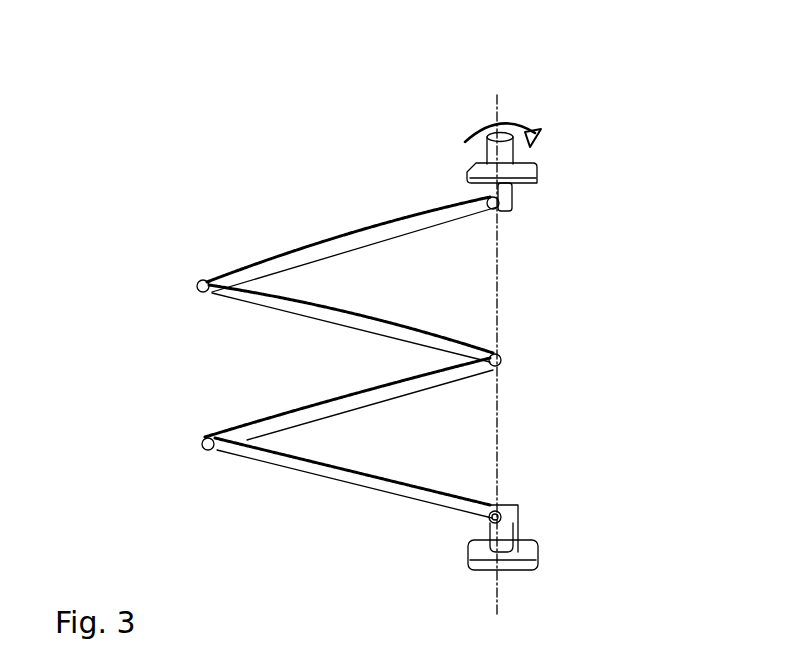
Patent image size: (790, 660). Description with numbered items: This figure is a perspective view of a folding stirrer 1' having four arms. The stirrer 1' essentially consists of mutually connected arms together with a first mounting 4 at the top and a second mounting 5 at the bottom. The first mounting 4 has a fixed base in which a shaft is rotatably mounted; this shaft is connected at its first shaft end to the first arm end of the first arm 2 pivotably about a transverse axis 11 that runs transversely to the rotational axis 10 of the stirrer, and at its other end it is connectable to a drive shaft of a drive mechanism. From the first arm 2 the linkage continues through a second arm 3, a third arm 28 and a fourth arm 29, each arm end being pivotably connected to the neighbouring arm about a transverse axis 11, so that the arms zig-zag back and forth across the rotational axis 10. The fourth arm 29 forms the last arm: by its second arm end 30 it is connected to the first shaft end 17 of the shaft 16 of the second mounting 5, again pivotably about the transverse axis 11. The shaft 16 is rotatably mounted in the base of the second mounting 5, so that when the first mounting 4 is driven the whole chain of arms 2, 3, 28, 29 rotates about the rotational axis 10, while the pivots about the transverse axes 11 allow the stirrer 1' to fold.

The stirrer 1' is at (359, 87).
The first arm 2 is at (388, 232).
The second arm 3 is at (320, 318).
The first mounting 4 is at (522, 170).
The second mounting 5 is at (525, 548).
The rotational axis 10 is at (505, 276).
The transverse axis 11 is at (512, 208).
The shaft 16 is at (520, 537).
The first shaft end 17 is at (517, 510).
The third arm 28 is at (377, 397).
The fourth arm 29 is at (357, 483).
The second arm end 30 is at (480, 512).